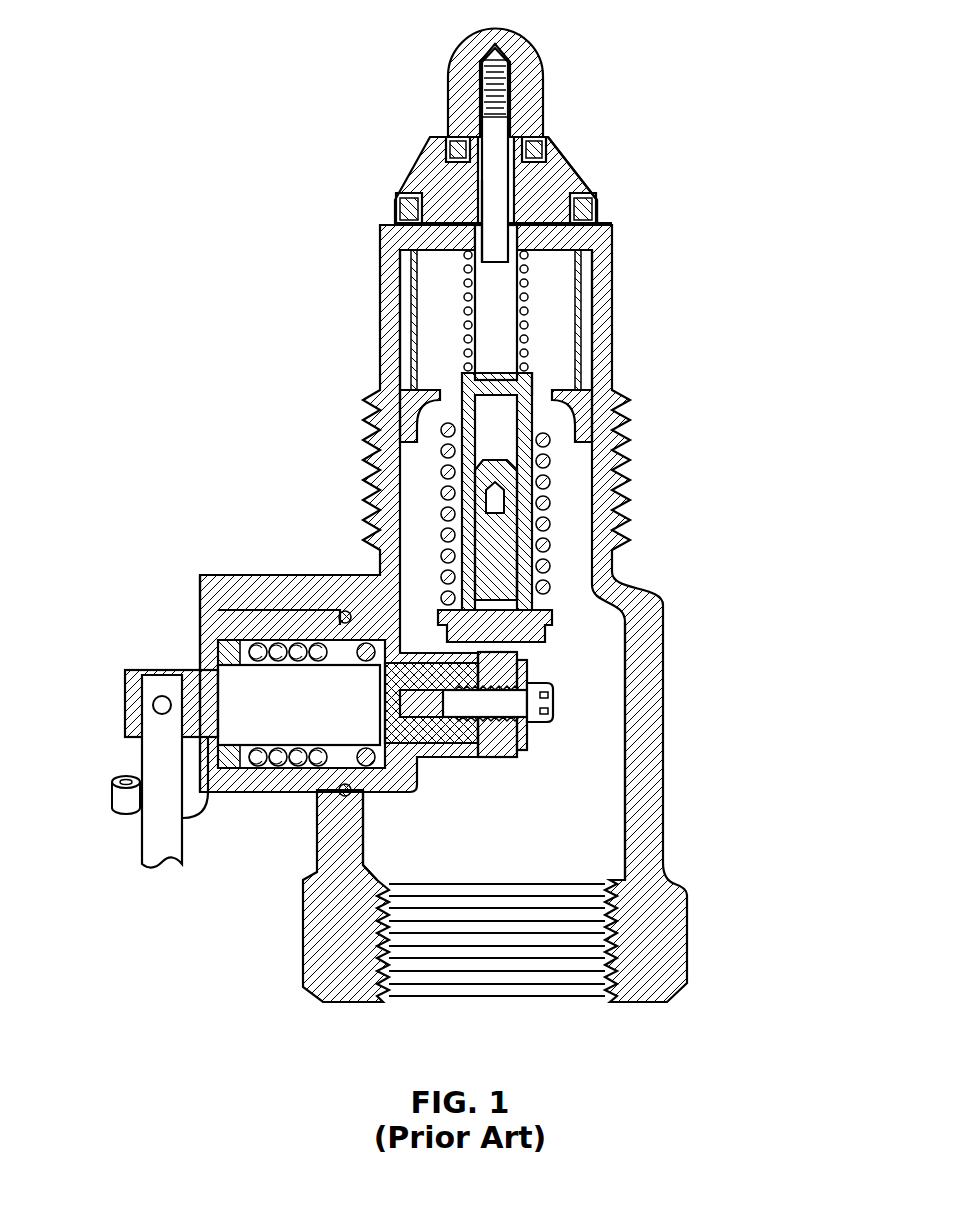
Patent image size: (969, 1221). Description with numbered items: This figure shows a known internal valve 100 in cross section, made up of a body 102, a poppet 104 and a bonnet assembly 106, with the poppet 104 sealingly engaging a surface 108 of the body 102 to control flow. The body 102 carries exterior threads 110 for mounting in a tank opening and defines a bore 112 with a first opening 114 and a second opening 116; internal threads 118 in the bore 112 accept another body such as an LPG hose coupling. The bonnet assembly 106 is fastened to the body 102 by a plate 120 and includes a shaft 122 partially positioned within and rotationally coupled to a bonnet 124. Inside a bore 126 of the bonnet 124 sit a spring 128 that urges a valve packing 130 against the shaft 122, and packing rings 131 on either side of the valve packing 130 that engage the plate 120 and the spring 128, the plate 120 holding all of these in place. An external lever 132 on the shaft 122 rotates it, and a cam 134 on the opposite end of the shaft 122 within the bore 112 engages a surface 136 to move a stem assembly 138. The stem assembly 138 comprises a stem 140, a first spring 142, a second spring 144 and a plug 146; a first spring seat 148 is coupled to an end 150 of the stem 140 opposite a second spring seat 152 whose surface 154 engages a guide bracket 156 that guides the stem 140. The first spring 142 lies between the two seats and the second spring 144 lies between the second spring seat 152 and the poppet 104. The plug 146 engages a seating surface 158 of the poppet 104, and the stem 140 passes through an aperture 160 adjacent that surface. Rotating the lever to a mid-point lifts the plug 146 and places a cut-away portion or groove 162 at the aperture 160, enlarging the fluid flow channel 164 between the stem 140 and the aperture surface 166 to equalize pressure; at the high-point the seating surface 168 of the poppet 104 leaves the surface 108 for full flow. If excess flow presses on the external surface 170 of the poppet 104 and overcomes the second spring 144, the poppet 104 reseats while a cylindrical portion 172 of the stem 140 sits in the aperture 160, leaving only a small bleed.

The internal valve 100 is at (186, 42).
The body 102 is at (652, 815).
The poppet 104 is at (432, 152).
The bonnet assembly 106 is at (312, 562).
The surface 108 is at (405, 212).
The exterior threads 110 is at (376, 442).
The bore 112 is at (608, 707).
The first opening 114 is at (423, 258).
The second opening 116 is at (630, 1002).
The internal threads 118 is at (622, 906).
The plate 120 is at (207, 598).
The shaft 122 is at (262, 690).
The bonnet 124 is at (296, 790).
The bore 126 is at (254, 790).
The spring 128 is at (360, 790).
The valve packing 130 is at (300, 640).
The packing rings 131 is at (232, 762).
The external lever 132 is at (150, 832).
The cam 134 is at (592, 737).
The surface 136 is at (560, 642).
The stem assembly 138 is at (430, 505).
The stem 140 is at (493, 335).
The first spring 142 is at (600, 470).
The second spring 144 is at (468, 322).
The plug 146 is at (522, 54).
The first spring seat 148 is at (548, 612).
The end 150 is at (505, 560).
The second spring seat 152 is at (470, 388).
The surface 154 is at (560, 398).
The guide bracket 156 is at (586, 430).
The seating surface 158 is at (540, 143).
The aperture 160 is at (492, 192).
The cut-away portion or groove 162 is at (530, 268).
The fluid flow channel 164 is at (556, 162).
The surface 166 is at (457, 150).
The seating surface 168 is at (590, 232).
The external surface 170 is at (581, 192).
The cylindrical portion 172 is at (530, 292).